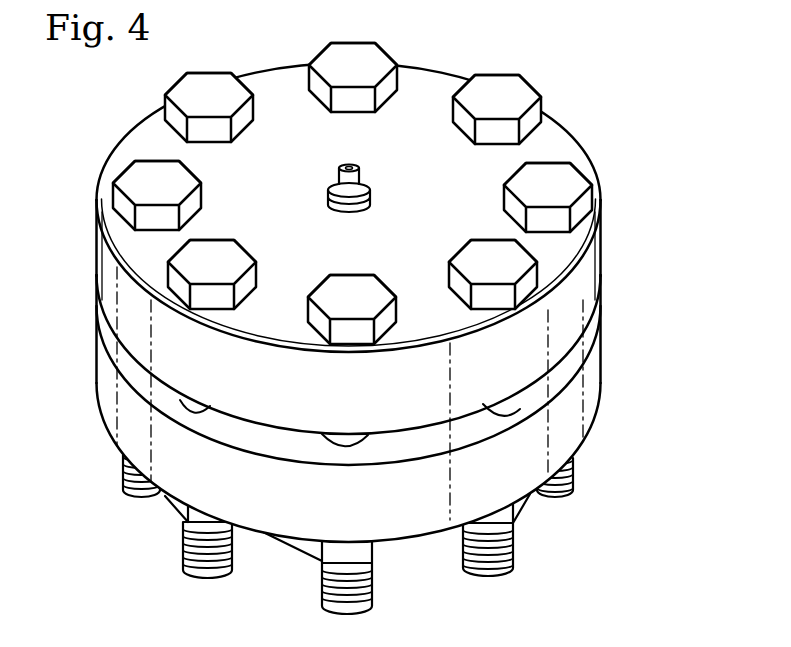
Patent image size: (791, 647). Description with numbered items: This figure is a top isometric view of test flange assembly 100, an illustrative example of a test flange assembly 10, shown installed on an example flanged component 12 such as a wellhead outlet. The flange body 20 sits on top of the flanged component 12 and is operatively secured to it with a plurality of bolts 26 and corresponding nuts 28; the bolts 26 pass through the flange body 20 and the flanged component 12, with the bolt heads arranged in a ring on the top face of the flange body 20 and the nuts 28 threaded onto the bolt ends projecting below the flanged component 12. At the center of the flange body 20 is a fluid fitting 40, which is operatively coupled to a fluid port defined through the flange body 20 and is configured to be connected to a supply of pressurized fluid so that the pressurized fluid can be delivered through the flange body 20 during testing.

The test flange assembly 10 is at (650, 24).
The test flange assembly 100 is at (583, 50).
The flanged component 12 is at (604, 362).
The flange body 20 is at (604, 262).
The bolts 26 is at (194, 109).
The nuts 28 is at (178, 507).
The fluid fitting 40 is at (362, 168).